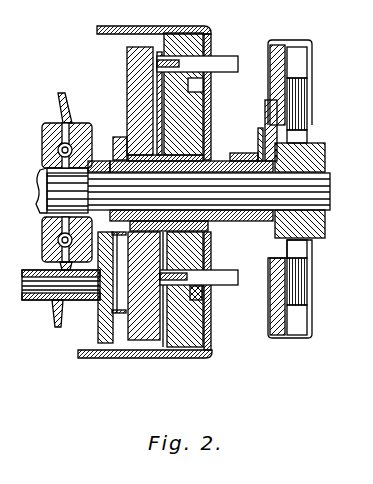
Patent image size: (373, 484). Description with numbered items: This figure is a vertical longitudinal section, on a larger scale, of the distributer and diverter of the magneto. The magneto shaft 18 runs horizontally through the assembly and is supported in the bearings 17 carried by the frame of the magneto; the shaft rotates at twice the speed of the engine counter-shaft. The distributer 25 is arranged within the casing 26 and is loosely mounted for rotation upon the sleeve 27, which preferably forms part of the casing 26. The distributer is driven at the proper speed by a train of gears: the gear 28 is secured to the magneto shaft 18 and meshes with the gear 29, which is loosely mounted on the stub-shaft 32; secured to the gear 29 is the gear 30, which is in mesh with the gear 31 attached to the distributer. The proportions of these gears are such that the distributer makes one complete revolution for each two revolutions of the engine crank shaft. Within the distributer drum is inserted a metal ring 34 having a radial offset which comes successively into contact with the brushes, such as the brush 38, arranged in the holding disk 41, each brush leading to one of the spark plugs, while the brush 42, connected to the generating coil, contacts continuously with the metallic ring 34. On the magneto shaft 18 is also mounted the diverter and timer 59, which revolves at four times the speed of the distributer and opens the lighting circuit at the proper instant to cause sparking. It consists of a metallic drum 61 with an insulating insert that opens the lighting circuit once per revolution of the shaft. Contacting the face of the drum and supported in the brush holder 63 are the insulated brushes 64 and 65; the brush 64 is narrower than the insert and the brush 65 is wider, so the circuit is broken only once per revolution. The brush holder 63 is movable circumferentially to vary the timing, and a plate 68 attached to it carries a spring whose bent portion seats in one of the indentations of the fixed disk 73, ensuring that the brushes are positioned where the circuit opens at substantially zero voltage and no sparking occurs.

The bearings 17 is at (50, 143).
The magneto shaft 18 is at (325, 192).
The distributer 25 is at (127, 60).
The casing 26 is at (155, 27).
The sleeve 27 is at (222, 153).
The gear 28 is at (103, 158).
The gear 29 is at (100, 320).
The gear 30 is at (118, 315).
The gear 31 is at (119, 137).
The stub-shaft 32 is at (37, 285).
The metal ring 34 is at (155, 335).
The brush 38 is at (190, 277).
The holding disk 41 is at (185, 117).
The brush 42 is at (207, 34).
The diverter and timer 59 is at (323, 147).
The metallic drum 61 is at (315, 163).
The brush holder 63 is at (312, 58).
The brush 64 is at (303, 100).
The brush 65 is at (303, 268).
The plate 68 is at (268, 110).
The fixed disk 73 is at (258, 143).